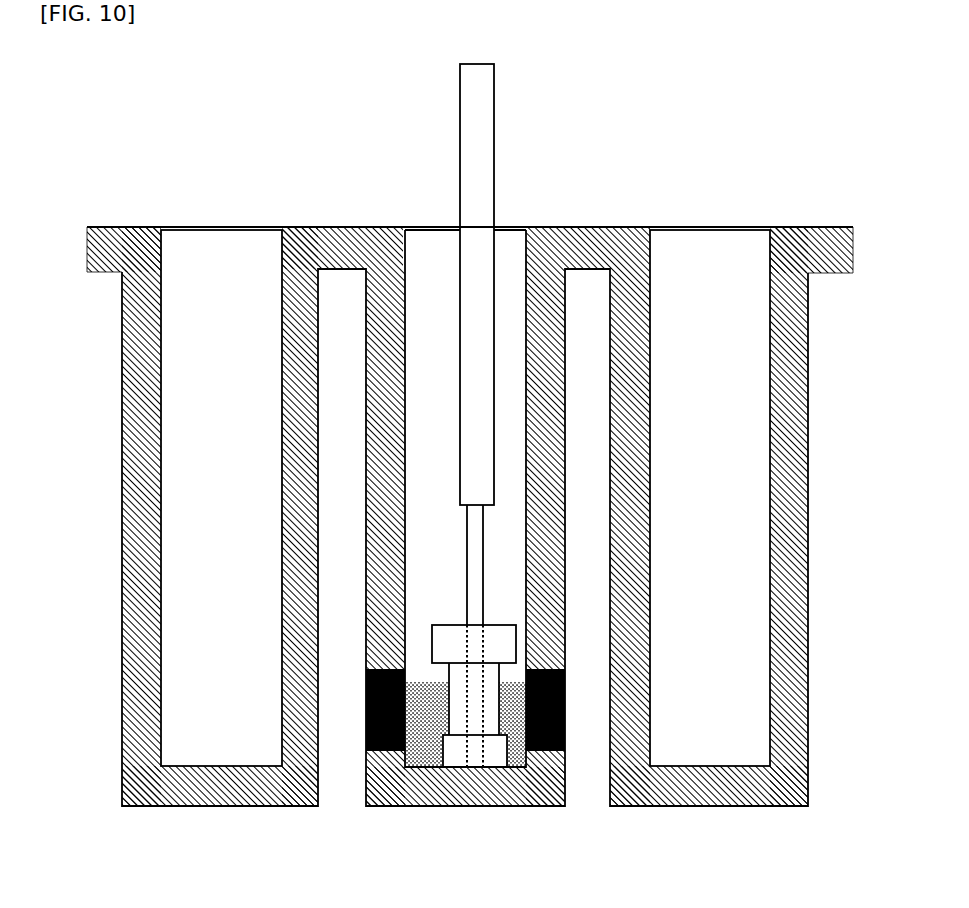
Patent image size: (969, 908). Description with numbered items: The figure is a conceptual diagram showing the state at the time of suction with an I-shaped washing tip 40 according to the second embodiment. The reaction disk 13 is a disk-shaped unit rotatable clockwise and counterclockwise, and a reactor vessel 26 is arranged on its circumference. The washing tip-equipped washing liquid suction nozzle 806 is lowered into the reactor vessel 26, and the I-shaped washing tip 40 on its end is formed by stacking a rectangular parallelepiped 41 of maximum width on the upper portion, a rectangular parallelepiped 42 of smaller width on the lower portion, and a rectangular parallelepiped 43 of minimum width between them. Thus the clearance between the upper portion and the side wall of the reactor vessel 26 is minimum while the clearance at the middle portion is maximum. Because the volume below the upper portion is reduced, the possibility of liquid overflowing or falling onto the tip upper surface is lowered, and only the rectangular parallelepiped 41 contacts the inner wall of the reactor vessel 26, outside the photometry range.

The reaction disk 13 is at (302, 227).
The washing tip-equipped washing liquid suction nozzle 806 is at (495, 123).
The reactor vessel 26 is at (362, 733).
The rectangular parallelepiped 41 is at (516, 643).
The rectangular parallelepiped 42 is at (508, 745).
The rectangular parallelepiped 43 is at (500, 698).
The I-shaped washing tip 40 is at (495, 752).